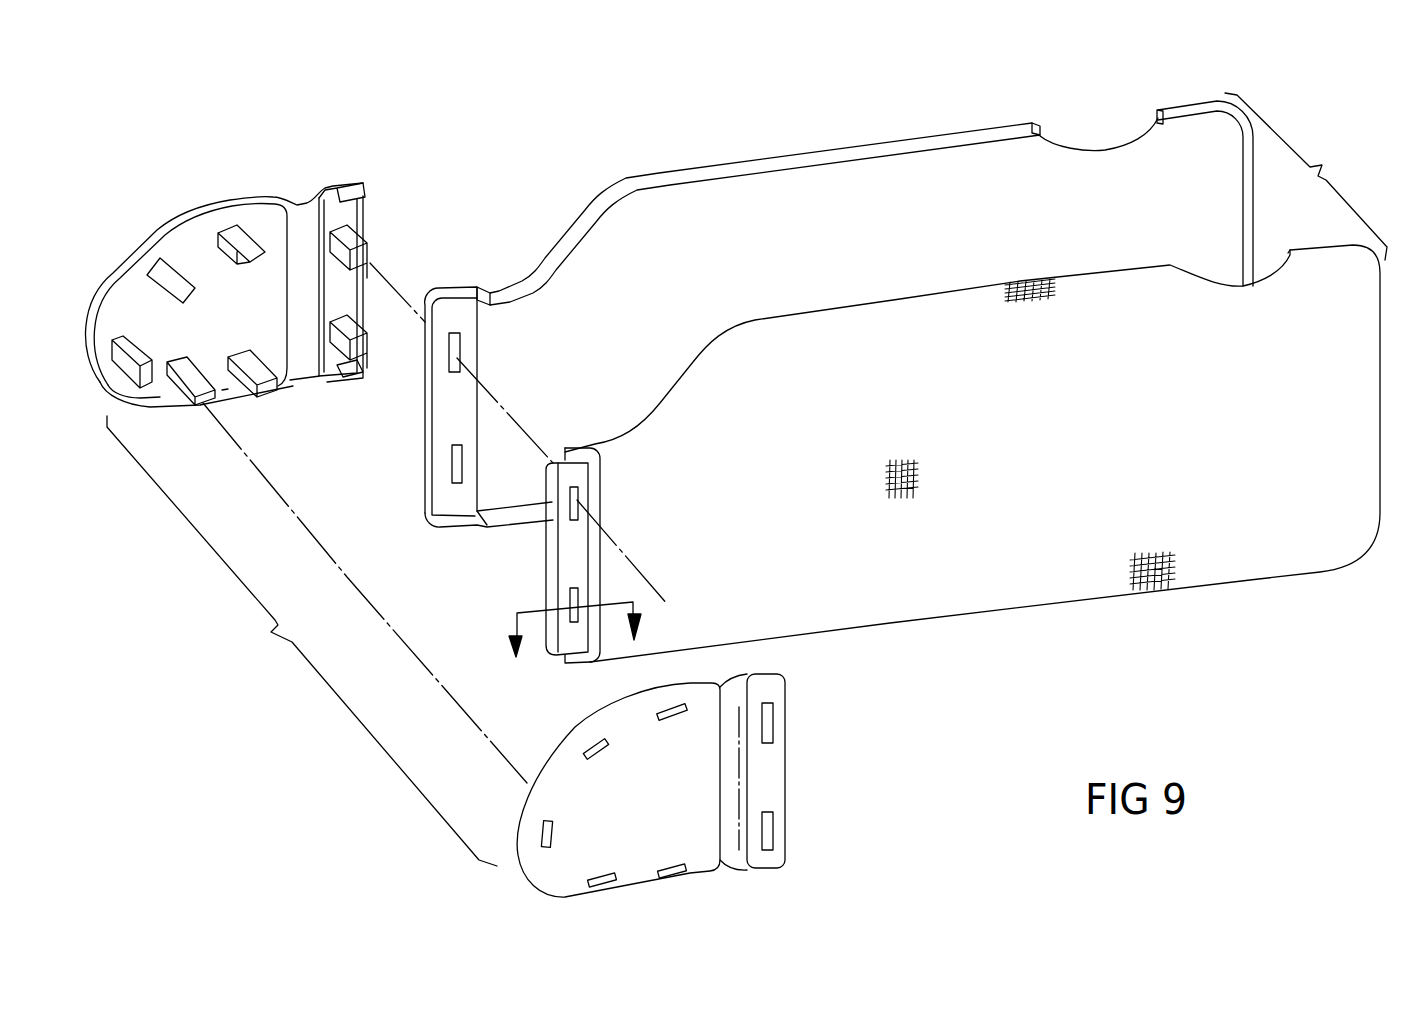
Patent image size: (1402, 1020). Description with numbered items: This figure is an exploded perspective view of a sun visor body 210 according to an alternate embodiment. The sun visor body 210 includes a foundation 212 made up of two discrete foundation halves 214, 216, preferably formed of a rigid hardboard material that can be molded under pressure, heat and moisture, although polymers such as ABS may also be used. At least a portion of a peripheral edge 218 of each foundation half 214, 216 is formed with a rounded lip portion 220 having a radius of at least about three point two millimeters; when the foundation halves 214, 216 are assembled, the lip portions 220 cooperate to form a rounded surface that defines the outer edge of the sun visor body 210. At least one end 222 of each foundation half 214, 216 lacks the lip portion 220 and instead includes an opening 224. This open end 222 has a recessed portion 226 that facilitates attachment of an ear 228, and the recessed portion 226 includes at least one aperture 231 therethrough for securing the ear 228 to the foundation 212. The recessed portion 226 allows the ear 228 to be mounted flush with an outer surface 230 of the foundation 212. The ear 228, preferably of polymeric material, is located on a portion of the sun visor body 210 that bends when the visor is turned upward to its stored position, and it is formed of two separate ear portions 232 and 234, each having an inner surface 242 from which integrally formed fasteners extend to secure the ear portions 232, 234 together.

The sun visor body 210 is at (636, 133).
The foundation 212 is at (1306, 176).
The foundation half 214 is at (969, 124).
The foundation half 216 is at (1228, 597).
The peripheral edge 218 is at (776, 167).
The lip portion 220 is at (1060, 282).
The end 222 is at (427, 453).
The opening 224 is at (440, 397).
The recessed portion 226 is at (573, 548).
The ear 228 is at (302, 641).
The outer surface 230 is at (1002, 585).
The aperture 231 is at (450, 467).
The ear portion 232 is at (214, 196).
The ear portion 234 is at (691, 882).
The inner surface 242 is at (335, 295).